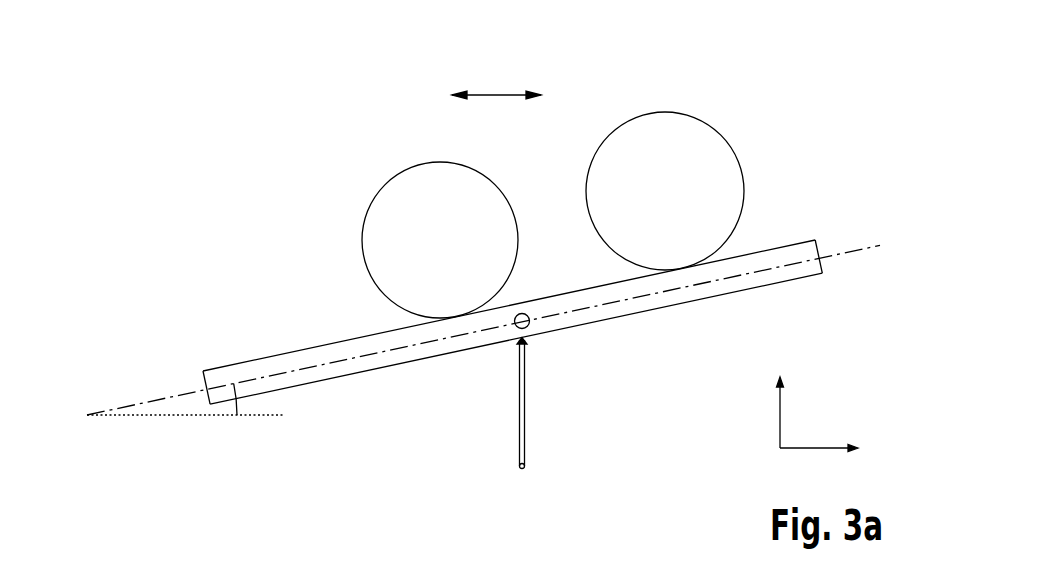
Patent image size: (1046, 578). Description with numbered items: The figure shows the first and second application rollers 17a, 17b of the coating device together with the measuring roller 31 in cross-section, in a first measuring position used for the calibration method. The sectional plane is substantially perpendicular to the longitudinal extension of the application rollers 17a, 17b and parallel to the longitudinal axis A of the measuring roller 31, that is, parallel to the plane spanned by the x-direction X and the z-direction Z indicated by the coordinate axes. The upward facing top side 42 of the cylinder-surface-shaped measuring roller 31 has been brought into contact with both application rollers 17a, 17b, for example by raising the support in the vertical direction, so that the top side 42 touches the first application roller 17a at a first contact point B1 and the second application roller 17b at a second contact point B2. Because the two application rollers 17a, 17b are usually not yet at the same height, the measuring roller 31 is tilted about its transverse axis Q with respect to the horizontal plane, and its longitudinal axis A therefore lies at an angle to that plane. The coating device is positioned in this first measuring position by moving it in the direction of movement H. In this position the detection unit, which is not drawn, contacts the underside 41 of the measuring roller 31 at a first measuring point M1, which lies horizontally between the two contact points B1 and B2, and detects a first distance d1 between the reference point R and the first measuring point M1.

The first application roller 17a is at (400, 176).
The second application roller 17b is at (692, 127).
The measuring roller 31 is at (535, 298).
The underside 41 is at (806, 277).
The top side 42 is at (808, 238).
The longitudinal axis A is at (495, 319).
The first contact point B1 is at (457, 320).
The second contact point B2 is at (682, 273).
The transverse axis Q is at (522, 313).
The first measuring point M1 is at (527, 339).
The first distance d1 is at (525, 421).
The reference point R is at (524, 466).
The direction of movement H is at (496, 82).
The x-direction X is at (829, 448).
The z-direction Z is at (782, 395).